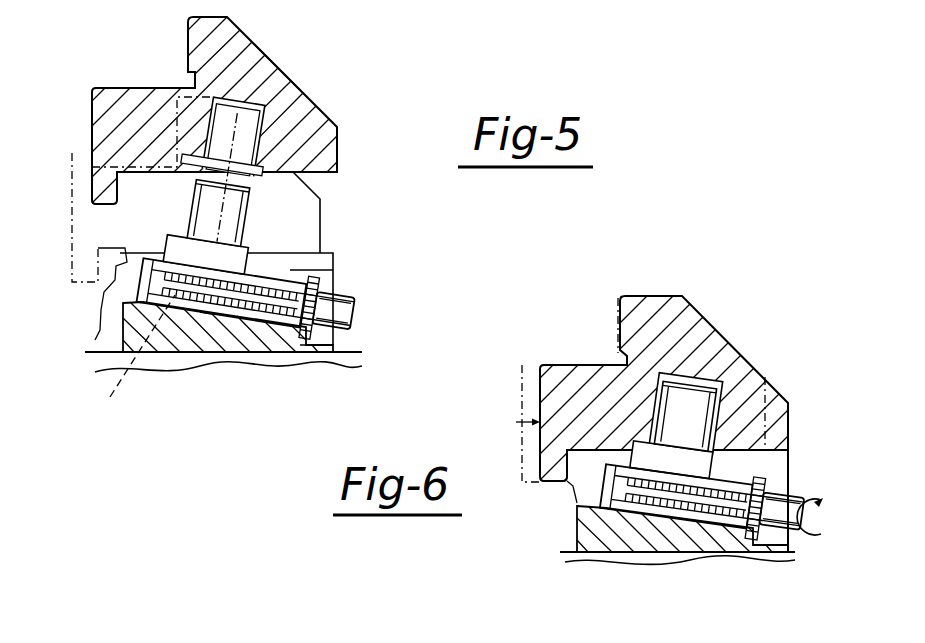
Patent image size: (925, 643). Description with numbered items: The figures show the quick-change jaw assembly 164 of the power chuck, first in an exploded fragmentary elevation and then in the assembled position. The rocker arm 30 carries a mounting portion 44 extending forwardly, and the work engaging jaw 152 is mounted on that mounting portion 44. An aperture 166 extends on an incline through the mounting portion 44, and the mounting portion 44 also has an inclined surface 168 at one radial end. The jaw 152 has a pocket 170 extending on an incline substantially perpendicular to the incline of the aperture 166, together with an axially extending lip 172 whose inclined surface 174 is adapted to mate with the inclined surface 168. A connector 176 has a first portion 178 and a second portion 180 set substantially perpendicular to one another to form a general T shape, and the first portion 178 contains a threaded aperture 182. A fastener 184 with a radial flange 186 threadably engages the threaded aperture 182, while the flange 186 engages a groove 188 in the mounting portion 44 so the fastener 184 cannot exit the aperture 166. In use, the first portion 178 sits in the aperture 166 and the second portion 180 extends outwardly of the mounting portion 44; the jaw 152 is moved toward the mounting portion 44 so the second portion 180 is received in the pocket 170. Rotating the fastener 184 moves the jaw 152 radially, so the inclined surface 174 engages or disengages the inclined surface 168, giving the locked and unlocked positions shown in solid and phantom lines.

In FIG. 5, the rocker arm 30 is at (308, 370).
In FIG. 6, the rocker arm 30 is at (598, 566).
In FIG. 5, the mounting portion 44 is at (227, 343).
In FIG. 6, the mounting portion 44 is at (770, 547).
In FIG. 5, the work engaging jaw 152 is at (273, 58).
In FIG. 5, the quick-change jaw assembly 164 is at (350, 94).
In FIG. 6, the quick-change jaw assembly 164 is at (600, 328).
In FIG. 5, the aperture 166 is at (300, 262).
In FIG. 6, the aperture 166 is at (762, 478).
In FIG. 5, the inclined surface 168 is at (99, 326).
In FIG. 5, the pocket 170 is at (247, 131).
In FIG. 5, the lip 172 is at (104, 186).
In FIG. 5, the inclined surface 174 is at (123, 182).
In FIG. 5, the connector 176 is at (262, 252).
In FIG. 5, the first portion 178 is at (207, 313).
In FIG. 5, the second portion 180 is at (170, 238).
In FIG. 5, the threaded aperture 182 is at (118, 352).
In FIG. 5, the fastener 184 is at (352, 302).
In FIG. 5, the radial flange 186 is at (340, 354).
In FIG. 5, the groove 188 is at (303, 340).